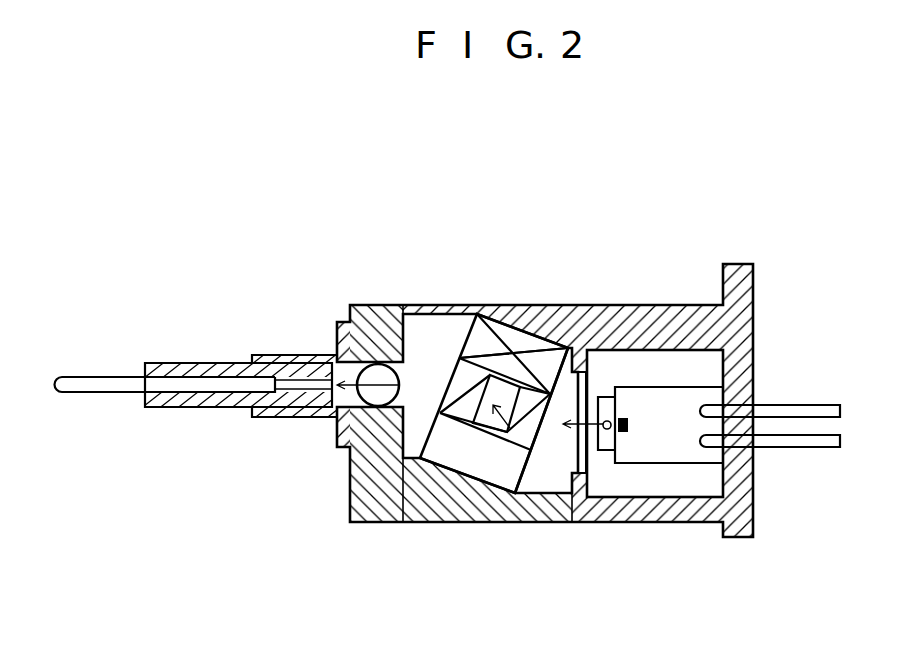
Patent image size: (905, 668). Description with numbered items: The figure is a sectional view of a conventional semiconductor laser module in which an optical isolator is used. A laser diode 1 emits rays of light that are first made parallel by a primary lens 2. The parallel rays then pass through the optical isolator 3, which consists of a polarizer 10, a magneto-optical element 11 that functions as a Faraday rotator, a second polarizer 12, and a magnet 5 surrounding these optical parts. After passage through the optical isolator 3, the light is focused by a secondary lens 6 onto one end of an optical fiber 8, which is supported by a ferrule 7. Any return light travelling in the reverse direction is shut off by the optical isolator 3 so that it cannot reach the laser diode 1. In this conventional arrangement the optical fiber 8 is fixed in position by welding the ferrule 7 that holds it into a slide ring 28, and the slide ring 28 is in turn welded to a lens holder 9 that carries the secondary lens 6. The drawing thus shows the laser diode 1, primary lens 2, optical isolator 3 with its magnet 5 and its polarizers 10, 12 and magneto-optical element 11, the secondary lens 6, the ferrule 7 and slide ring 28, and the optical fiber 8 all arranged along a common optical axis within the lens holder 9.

The laser diode 1 is at (627, 432).
The primary lens 2 is at (606, 430).
The optical isolator 3 is at (568, 299).
The magnet 5 is at (470, 468).
The secondary lens 6 is at (338, 353).
The ferrule 7 is at (183, 362).
The optical fiber 8 is at (92, 382).
The lens holder 9 is at (348, 505).
The polarizer 10 is at (537, 443).
The magneto-optical element 11 is at (457, 372).
The polarizer 12 is at (497, 386).
The slide ring 28 is at (294, 416).